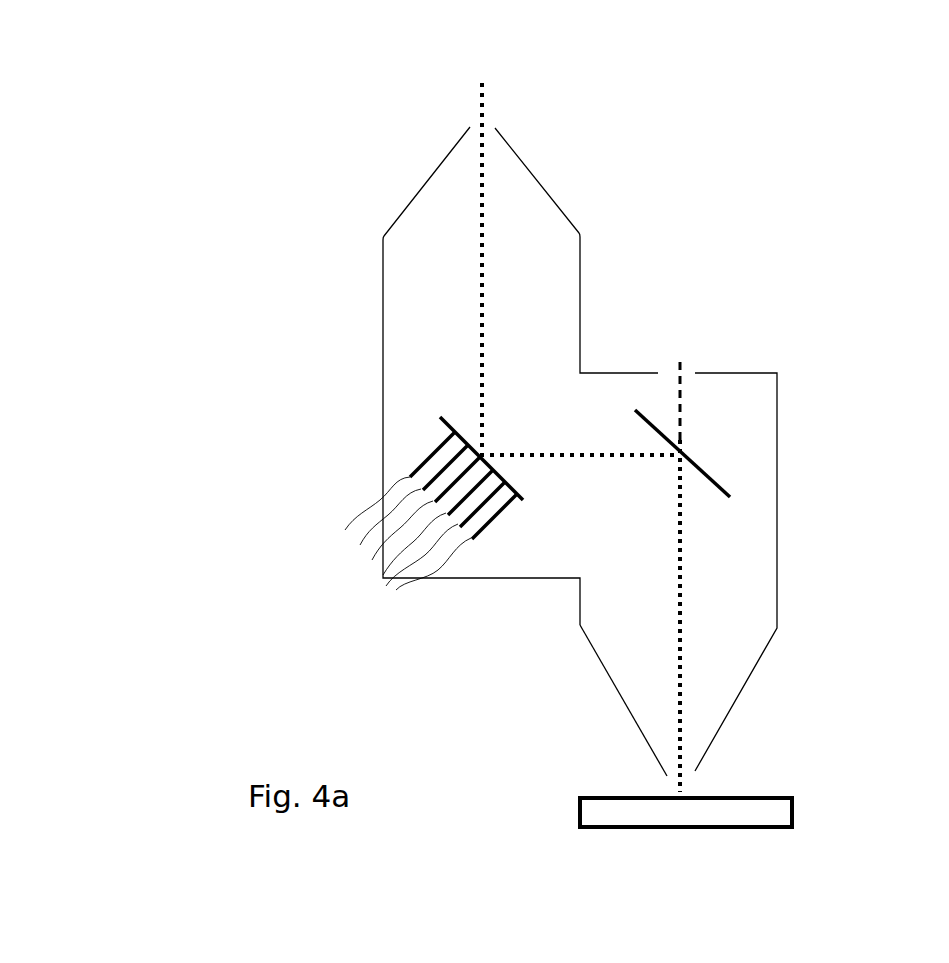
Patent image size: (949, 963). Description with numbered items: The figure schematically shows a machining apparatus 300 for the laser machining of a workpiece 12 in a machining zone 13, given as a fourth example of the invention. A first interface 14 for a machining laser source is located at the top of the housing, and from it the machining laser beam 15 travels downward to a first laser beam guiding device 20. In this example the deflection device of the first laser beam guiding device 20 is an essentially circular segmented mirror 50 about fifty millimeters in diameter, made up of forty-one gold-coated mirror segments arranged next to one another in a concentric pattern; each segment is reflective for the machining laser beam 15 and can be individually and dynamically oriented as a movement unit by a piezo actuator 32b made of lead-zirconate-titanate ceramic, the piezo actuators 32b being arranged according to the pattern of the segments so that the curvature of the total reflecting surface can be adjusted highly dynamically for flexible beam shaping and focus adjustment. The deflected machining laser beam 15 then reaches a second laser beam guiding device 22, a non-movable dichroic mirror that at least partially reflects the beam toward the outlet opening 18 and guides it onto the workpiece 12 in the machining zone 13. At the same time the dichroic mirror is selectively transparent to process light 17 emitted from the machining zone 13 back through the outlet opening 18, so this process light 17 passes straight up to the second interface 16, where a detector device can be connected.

The machining apparatus 300 is at (228, 152).
The machining laser beam 15 is at (477, 103).
The first interface 14 is at (495, 108).
The second interface 16 is at (687, 343).
The process light 17 is at (688, 400).
The second laser beam guiding device 22 is at (737, 467).
The segmented mirror 50 is at (450, 430).
The first laser beam guiding device 20 is at (406, 439).
The piezo actuator 32b is at (383, 577).
The outlet opening 18 is at (648, 774).
The machining zone 13 is at (700, 788).
The workpiece 12 is at (782, 807).